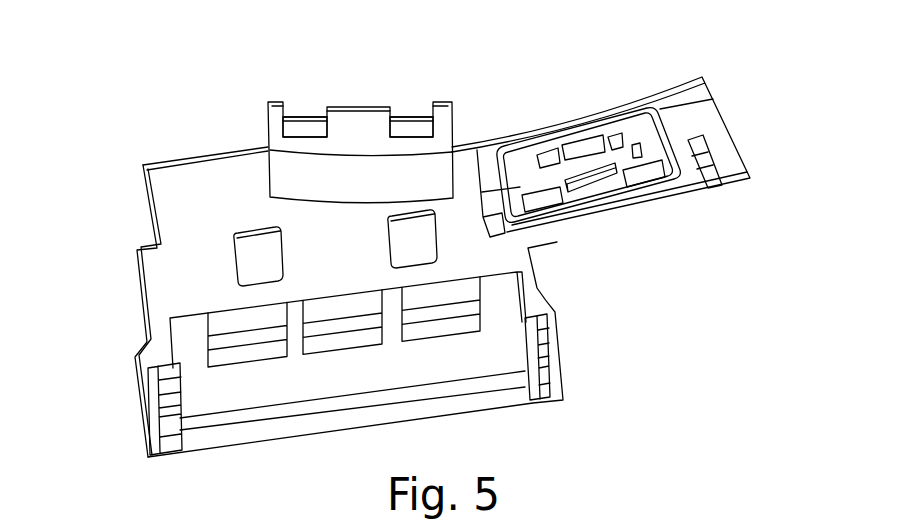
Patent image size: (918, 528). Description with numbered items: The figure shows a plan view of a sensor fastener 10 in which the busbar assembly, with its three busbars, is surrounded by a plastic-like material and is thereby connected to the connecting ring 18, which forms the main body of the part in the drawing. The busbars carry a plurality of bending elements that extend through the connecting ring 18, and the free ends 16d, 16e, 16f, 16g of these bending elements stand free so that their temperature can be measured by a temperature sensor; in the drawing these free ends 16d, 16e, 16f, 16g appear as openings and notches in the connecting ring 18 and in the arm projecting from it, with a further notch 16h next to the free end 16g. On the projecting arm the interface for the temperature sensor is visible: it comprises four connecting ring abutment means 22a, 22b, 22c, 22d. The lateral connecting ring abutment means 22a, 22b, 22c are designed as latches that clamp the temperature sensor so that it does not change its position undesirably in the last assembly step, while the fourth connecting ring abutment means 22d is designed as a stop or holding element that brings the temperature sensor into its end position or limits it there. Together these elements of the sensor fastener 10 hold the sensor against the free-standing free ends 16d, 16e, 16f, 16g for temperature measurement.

The connector housing 10 is at (124, 437).
The connecting ring 18 is at (168, 201).
The free end 16d is at (647, 173).
The free end 16e is at (590, 143).
The free end 16f is at (547, 200).
The free end 16g is at (413, 132).
The notch 16h is at (313, 132).
The connecting ring abutment means 22a is at (552, 150).
The connecting ring abutment means 22b is at (600, 180).
The connecting ring abutment means 22c is at (612, 137).
The fourth connecting ring abutment means 22d is at (637, 142).